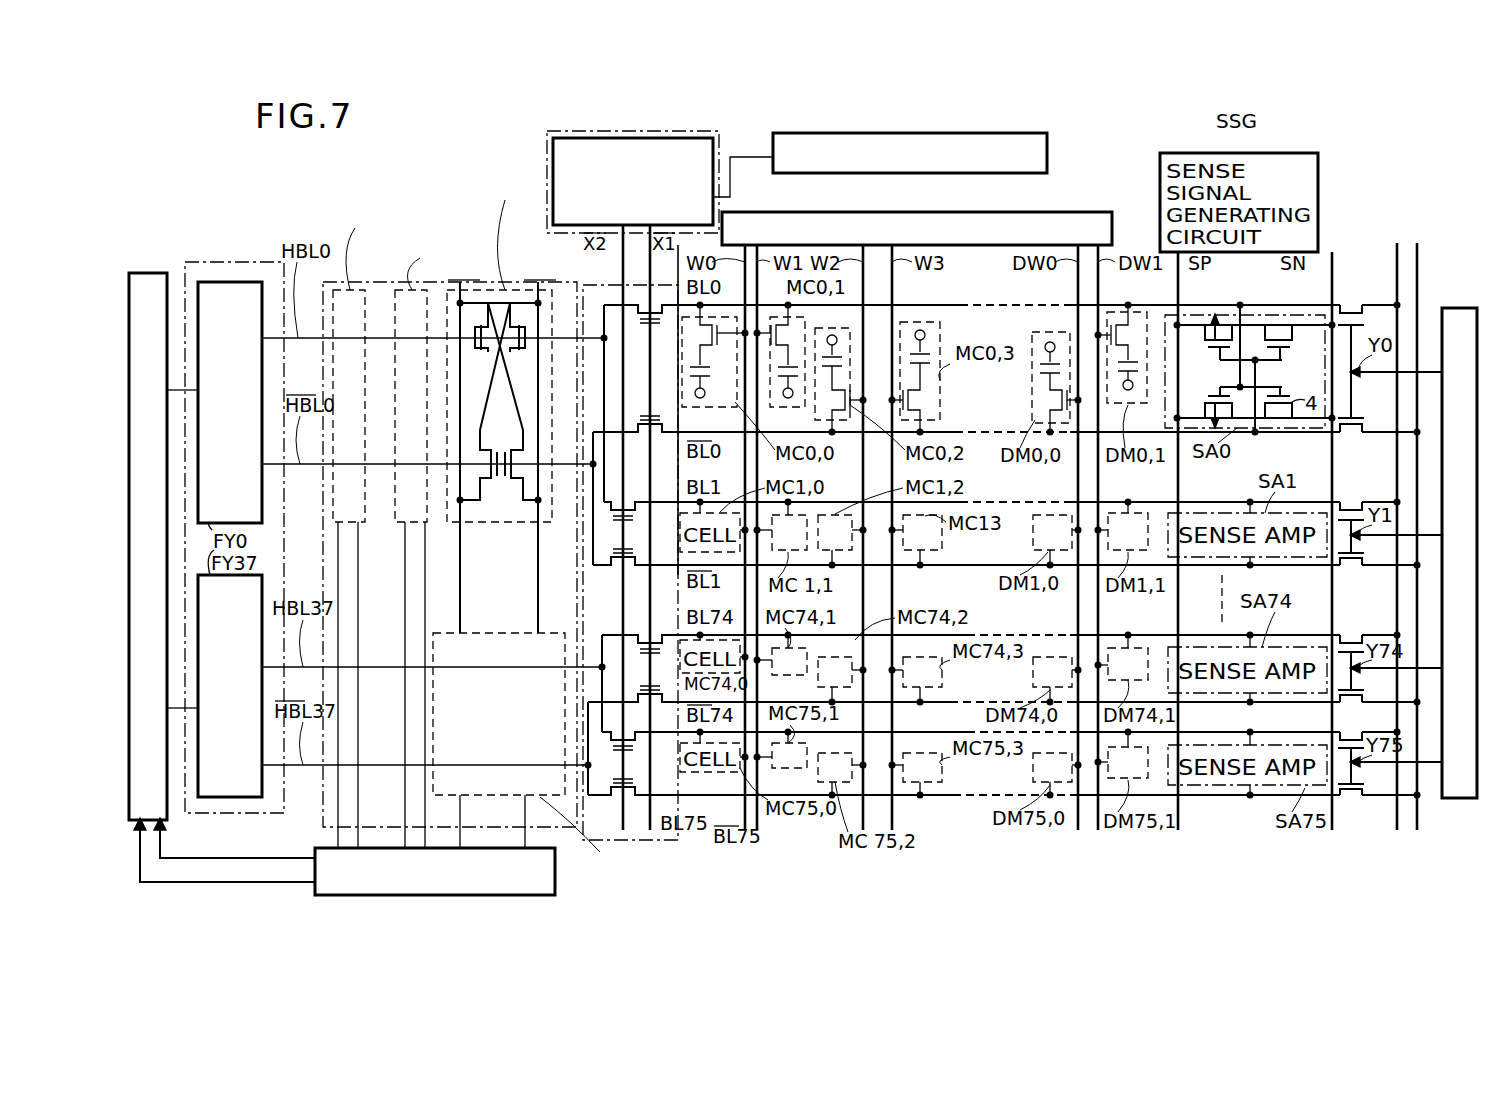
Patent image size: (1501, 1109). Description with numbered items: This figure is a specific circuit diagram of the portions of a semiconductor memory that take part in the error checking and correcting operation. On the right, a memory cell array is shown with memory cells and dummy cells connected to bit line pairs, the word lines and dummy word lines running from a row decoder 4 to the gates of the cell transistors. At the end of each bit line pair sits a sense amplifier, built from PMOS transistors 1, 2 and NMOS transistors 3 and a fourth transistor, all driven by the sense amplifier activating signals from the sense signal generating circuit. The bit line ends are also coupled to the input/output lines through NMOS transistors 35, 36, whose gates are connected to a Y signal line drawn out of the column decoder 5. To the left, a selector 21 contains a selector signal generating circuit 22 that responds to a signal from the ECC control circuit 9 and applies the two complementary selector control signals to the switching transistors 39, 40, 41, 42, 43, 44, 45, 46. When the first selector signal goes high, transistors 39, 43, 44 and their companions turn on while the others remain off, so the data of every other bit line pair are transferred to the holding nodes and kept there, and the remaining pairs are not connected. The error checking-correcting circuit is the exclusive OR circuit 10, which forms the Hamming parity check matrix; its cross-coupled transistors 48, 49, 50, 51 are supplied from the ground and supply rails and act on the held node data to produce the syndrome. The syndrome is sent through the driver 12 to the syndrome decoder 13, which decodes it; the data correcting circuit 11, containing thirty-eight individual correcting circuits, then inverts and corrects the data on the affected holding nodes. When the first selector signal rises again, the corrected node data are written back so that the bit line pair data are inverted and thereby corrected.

The syndrome decoder 13 is at (138, 273).
The data correcting circuit 11 is at (202, 262).
The exclusive OR circuit 10 is at (323, 815).
The driver 12 is at (492, 895).
The selector 21 is at (557, 131).
The selector signal generating circuit 22 is at (640, 138).
The ECC control circuit 9 is at (966, 133).
The row decoder 4 is at (1058, 212).
The column decoder 5 is at (1455, 798).
The NMOS transistor 35 is at (1345, 305).
The NMOS transistor 36 is at (1345, 432).
The transistor 39 is at (645, 300).
The transistor 40 is at (652, 416).
The transistor 41 is at (625, 500).
The transistor 42 is at (613, 566).
The transistor 43 is at (660, 634).
The transistor 44 is at (655, 686).
The transistor 45 is at (613, 738).
The transistor 46 is at (613, 796).
The exclusive OR transistor 48 is at (478, 352).
The exclusive OR transistor 49 is at (520, 352).
The exclusive OR transistor 50 is at (480, 478).
The exclusive OR transistor 51 is at (523, 500).
The PMOS transistor 1 is at (1205, 342).
The PMOS transistor 2 is at (1205, 402).
The NMOS transistor 3 is at (1292, 342).